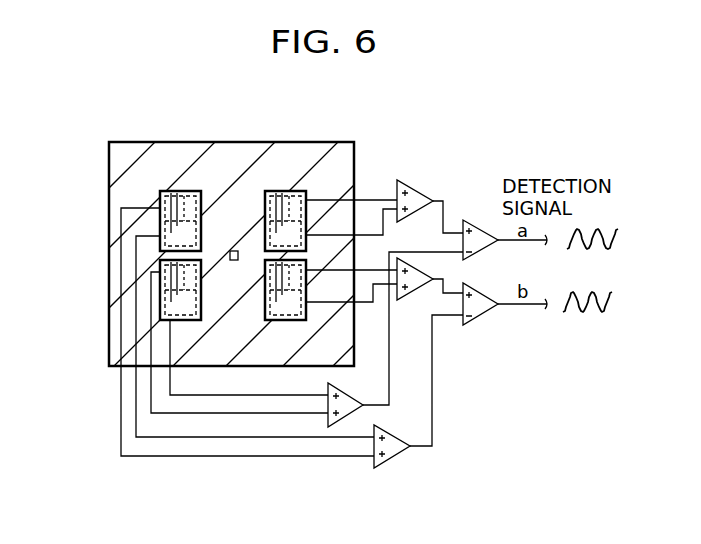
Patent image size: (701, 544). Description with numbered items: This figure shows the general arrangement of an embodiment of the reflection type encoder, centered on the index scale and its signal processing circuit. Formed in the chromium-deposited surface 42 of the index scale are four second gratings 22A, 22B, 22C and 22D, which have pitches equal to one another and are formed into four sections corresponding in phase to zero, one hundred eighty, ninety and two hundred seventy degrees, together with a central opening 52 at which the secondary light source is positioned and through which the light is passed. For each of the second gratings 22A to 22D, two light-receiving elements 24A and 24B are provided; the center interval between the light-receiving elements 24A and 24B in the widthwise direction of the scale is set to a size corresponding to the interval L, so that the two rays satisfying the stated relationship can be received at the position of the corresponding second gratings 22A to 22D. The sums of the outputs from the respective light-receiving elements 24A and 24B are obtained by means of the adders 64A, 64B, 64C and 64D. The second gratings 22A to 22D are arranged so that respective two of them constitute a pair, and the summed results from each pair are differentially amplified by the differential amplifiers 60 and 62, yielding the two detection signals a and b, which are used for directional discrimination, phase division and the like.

The second grating 22A is at (301, 191).
The second grating 22B is at (158, 262).
The second grating 22C is at (305, 259).
The second grating 22D is at (188, 191).
The light-receiving element 24A is at (158, 233).
The light-receiving element 24B is at (158, 204).
The chromium-deposited surface 42 is at (195, 148).
The central opening 52 is at (232, 251).
The differential amplifier 60 is at (470, 221).
The differential amplifier 62 is at (480, 316).
The adder 64A is at (405, 181).
The adder 64B is at (356, 400).
The adder 64C is at (425, 273).
The adder 64D is at (396, 456).